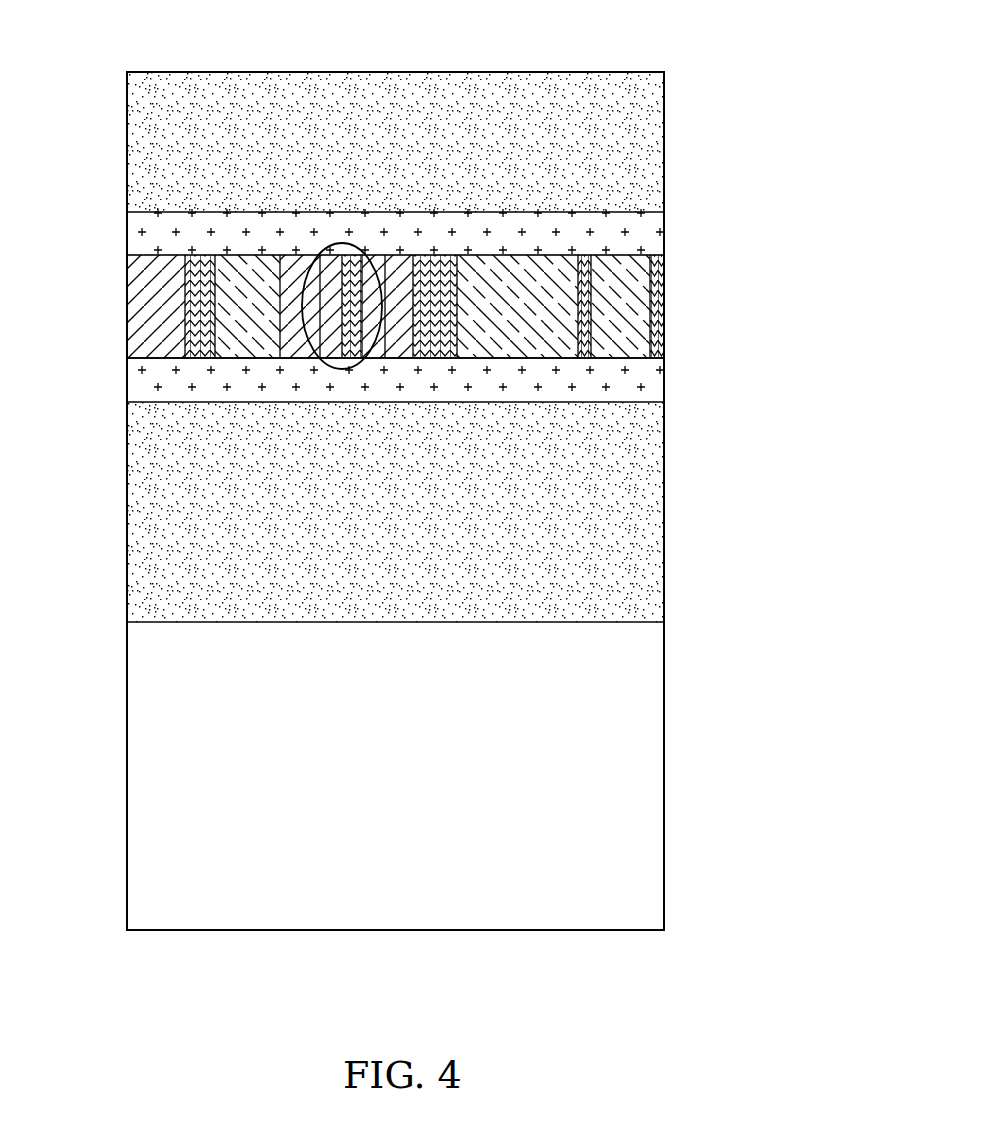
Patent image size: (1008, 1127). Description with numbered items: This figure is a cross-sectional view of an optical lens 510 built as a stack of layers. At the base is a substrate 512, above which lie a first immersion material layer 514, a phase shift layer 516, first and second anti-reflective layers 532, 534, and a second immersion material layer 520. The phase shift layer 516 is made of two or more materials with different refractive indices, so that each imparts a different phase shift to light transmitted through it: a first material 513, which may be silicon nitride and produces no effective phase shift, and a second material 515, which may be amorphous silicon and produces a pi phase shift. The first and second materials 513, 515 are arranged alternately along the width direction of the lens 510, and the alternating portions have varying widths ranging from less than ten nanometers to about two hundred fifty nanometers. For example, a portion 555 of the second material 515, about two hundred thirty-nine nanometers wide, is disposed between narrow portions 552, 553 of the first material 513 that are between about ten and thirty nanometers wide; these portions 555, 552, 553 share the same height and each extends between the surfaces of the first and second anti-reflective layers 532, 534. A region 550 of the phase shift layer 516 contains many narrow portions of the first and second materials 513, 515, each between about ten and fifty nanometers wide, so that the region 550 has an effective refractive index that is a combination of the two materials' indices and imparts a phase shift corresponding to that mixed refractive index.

The optical lens 510 is at (766, 81).
The substrate 512 is at (640, 743).
The first material 513 is at (140, 302).
The first immersion material layer 514 is at (632, 522).
The second material 515 is at (640, 359).
The phase shift layer 516 is at (399, 192).
The second immersion material layer 520 is at (636, 135).
The first anti-reflective layer 532 is at (645, 388).
The second anti-reflective layer 534 is at (648, 228).
The region 550 is at (336, 246).
The narrow portion 552 is at (458, 255).
The narrow portion 553 is at (580, 256).
The portion 555 is at (521, 278).